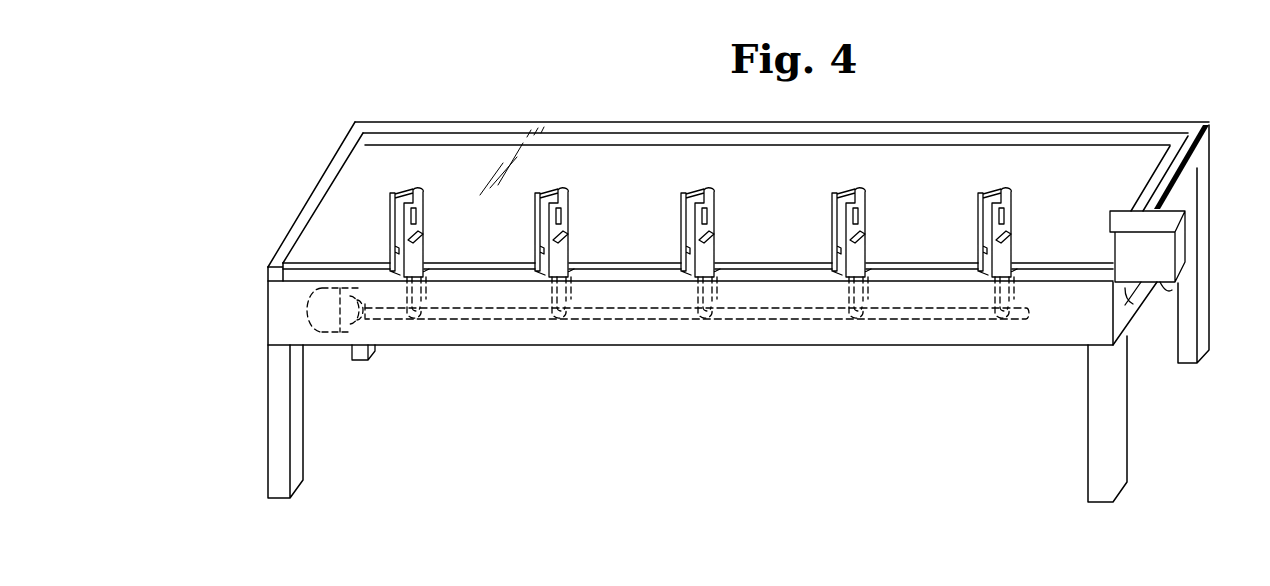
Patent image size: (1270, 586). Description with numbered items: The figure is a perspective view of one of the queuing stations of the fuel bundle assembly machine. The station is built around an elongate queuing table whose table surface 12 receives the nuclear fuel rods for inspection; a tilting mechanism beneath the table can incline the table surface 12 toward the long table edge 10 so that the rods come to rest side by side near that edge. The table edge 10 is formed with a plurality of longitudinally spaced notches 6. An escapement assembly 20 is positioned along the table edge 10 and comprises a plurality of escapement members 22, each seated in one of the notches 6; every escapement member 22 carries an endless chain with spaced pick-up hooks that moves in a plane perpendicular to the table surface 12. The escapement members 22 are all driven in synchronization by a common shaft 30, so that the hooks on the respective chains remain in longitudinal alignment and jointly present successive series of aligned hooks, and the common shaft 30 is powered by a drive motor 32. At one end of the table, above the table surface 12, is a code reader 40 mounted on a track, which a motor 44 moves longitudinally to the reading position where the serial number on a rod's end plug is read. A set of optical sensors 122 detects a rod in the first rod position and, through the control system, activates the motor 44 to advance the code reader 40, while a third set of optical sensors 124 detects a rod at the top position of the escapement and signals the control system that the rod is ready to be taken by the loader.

The notch 6 is at (577, 260).
The table edge 10 is at (1043, 333).
The table surface 12 is at (345, 215).
The escapement assembly 20 is at (733, 277).
The escapement member 22 is at (738, 234).
The common shaft 30 is at (518, 320).
The drive motor 32 is at (307, 311).
The code reader 40 is at (1182, 215).
The motor 44 is at (1167, 290).
The optical sensors 122 is at (423, 228).
The optical sensors 124 is at (422, 205).